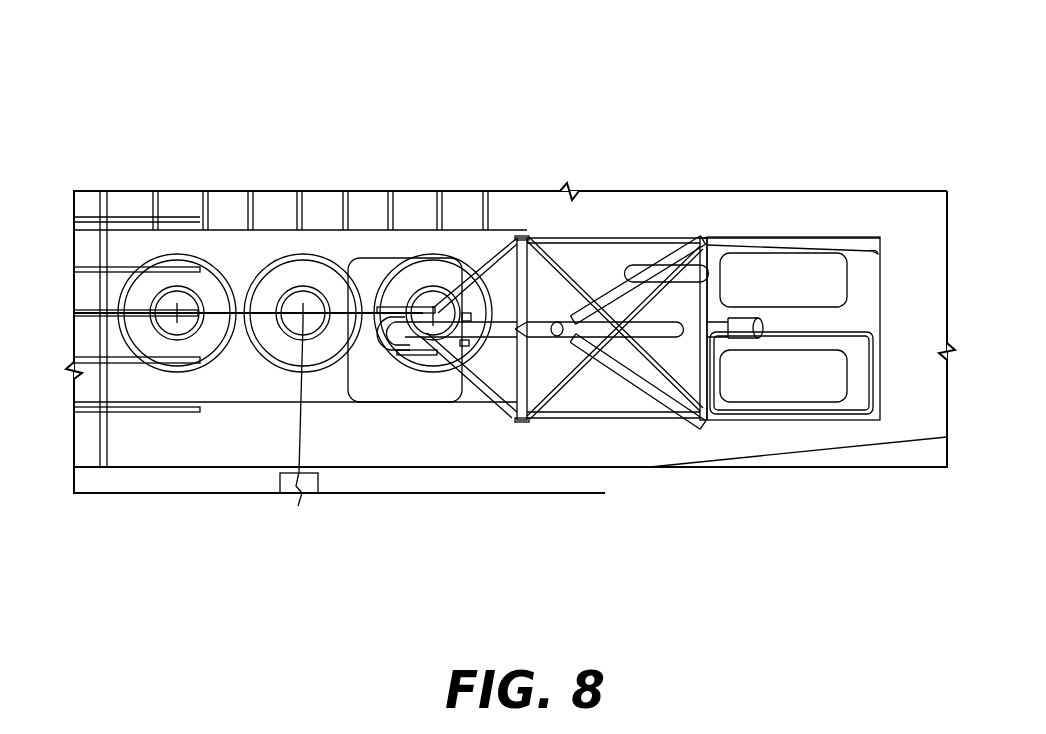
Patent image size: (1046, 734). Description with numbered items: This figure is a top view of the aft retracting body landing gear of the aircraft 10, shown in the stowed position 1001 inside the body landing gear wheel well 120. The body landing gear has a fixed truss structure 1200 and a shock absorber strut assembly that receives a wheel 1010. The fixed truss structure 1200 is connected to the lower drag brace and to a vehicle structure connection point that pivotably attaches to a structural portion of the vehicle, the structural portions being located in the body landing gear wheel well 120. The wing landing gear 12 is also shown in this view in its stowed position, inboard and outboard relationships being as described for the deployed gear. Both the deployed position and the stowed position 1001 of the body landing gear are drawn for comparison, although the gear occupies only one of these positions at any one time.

The aircraft 10 is at (737, 119).
The wing landing gear 12 is at (197, 288).
The wheel 1010 is at (370, 267).
The fixed truss structure 1200 is at (496, 248).
The stowed position 1001 is at (783, 270).
The body landing gear wheel well 120 is at (783, 440).